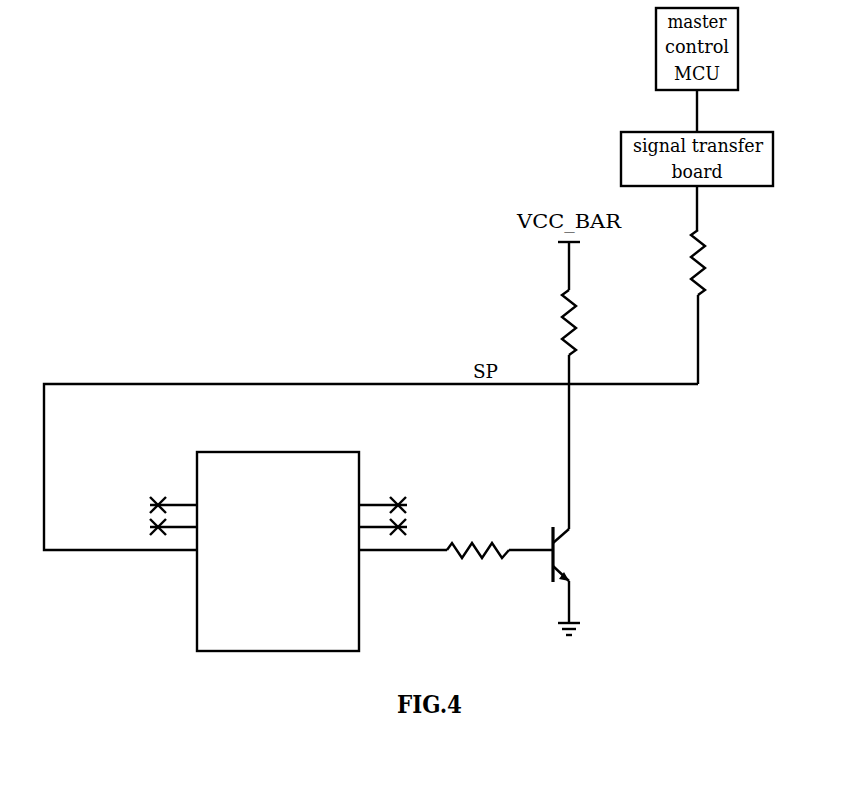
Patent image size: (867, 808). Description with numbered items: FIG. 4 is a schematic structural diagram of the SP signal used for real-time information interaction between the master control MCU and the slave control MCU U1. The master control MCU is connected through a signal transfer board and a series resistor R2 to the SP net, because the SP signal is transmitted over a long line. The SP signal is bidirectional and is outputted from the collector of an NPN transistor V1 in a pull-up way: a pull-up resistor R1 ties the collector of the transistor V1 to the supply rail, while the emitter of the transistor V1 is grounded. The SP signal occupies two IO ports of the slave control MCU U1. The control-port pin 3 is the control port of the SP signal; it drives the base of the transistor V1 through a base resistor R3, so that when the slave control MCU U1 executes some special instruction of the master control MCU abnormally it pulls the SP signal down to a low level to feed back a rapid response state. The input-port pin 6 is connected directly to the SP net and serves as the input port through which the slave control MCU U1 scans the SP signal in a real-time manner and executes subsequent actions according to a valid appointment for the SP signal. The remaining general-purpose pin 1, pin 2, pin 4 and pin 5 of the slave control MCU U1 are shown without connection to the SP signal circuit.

The slave control MCU U1 is at (298, 533).
The pull-up resistor R1 is at (594, 385).
The series resistor R2 is at (726, 306).
The base resistor R3 is at (500, 553).
The NPN transistor V1 is at (580, 578).
The GPIO1 pin 1 is at (373, 492).
The GPIO2 pin 2 is at (373, 516).
The GPIO3 pin 3 is at (373, 539).
The GPIO4 pin 4 is at (183, 492).
The GPIO5 pin 5 is at (183, 516).
The GPIO6 pin 6 is at (183, 539).